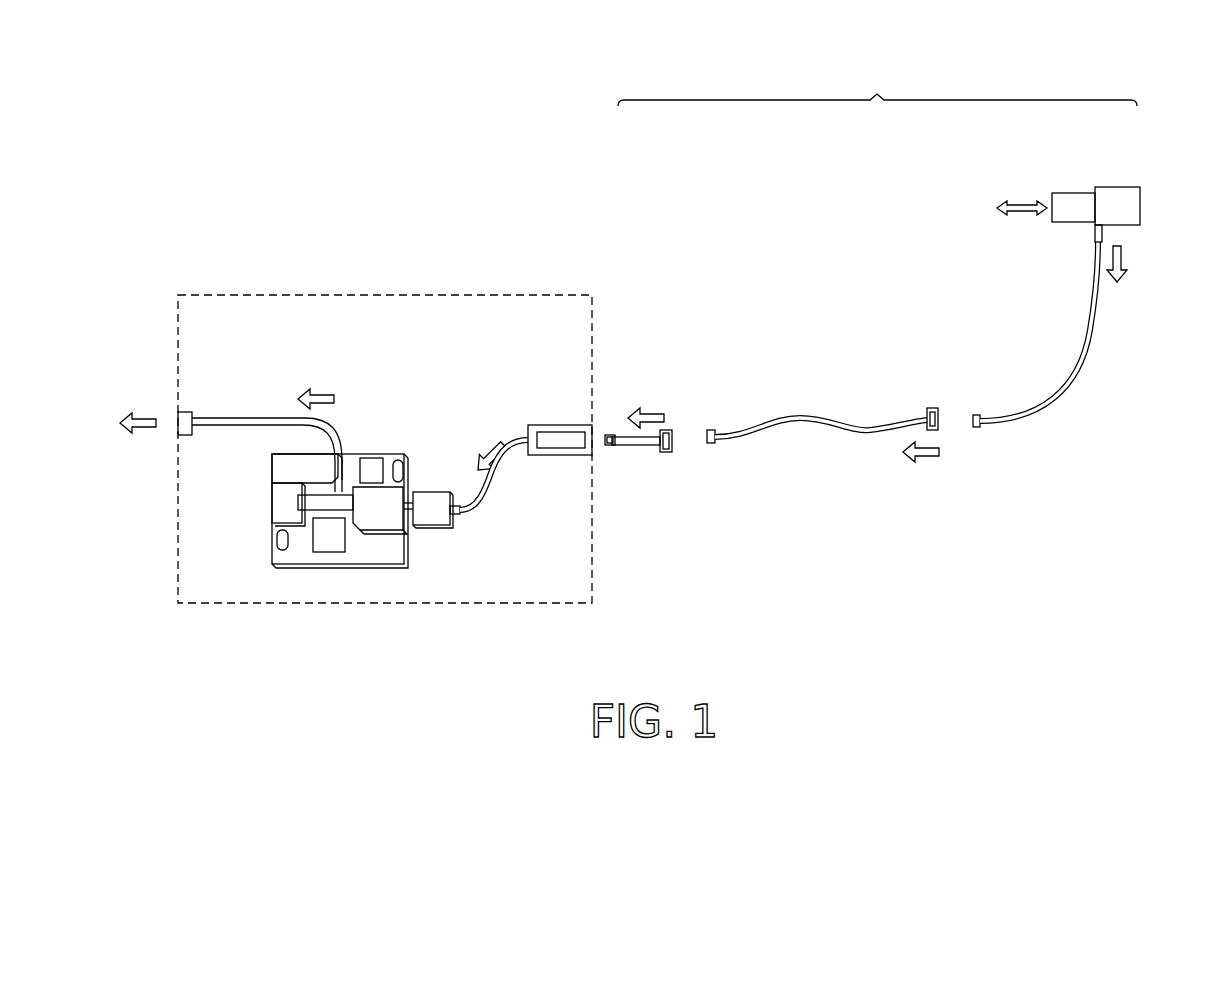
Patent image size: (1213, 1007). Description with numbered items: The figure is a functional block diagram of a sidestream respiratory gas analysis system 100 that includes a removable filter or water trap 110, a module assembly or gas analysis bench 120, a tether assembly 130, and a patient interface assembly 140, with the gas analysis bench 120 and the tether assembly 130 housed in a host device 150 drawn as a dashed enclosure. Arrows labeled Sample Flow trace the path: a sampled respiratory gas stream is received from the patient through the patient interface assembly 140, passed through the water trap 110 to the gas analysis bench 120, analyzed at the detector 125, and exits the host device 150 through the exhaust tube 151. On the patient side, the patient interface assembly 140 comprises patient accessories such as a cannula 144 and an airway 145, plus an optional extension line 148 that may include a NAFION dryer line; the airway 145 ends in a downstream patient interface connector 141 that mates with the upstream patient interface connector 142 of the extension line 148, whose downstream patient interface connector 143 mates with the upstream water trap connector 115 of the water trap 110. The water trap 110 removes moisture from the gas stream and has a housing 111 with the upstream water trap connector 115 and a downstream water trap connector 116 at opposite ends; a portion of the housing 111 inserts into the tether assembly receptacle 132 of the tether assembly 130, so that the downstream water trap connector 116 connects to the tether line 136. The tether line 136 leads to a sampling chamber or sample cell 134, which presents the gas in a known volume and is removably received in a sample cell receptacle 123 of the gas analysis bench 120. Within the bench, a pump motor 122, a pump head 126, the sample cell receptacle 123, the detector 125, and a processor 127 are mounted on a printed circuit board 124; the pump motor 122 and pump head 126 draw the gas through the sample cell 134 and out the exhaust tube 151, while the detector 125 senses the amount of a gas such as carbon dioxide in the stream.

The sidestream respiratory gas analysis system 100 is at (285, 117).
The water trap 110 is at (645, 447).
The housing 111 is at (613, 448).
The upstream water trap connector 115 is at (670, 452).
The downstream water trap connector 116 is at (612, 434).
The gas analysis bench 120 is at (275, 351).
The pump motor 122 is at (278, 470).
The sample cell receptacle 123 is at (392, 520).
The printed circuit board 124 is at (372, 553).
The detector 125 is at (372, 462).
The pump head 126 is at (278, 504).
The processor 127 is at (322, 556).
The tether assembly 130 is at (418, 351).
The tether assembly receptacle 132 is at (560, 458).
The sample cell 134 is at (430, 516).
The tether line 136 is at (487, 500).
The patient interface assembly 140 is at (1050, 440).
The downstream patient interface connector 141 is at (978, 415).
The upstream patient interface connector 142 is at (932, 408).
The downstream patient interface connector 143 is at (715, 447).
The cannula 144 is at (1115, 190).
The airway 145 is at (1090, 370).
The extension line 148 is at (800, 420).
The host device 150 is at (262, 292).
The exhaust tube 151 is at (213, 417).